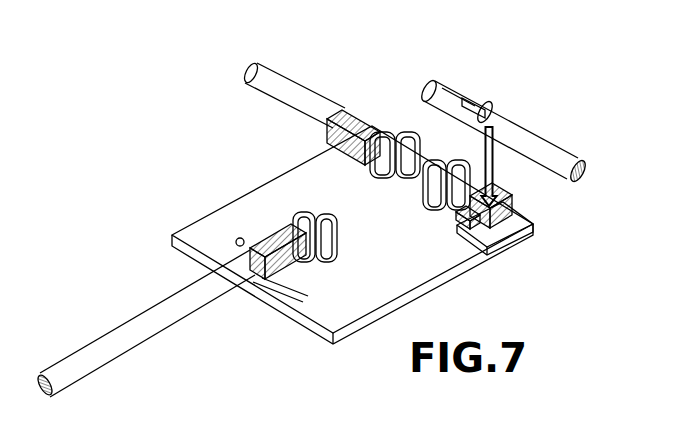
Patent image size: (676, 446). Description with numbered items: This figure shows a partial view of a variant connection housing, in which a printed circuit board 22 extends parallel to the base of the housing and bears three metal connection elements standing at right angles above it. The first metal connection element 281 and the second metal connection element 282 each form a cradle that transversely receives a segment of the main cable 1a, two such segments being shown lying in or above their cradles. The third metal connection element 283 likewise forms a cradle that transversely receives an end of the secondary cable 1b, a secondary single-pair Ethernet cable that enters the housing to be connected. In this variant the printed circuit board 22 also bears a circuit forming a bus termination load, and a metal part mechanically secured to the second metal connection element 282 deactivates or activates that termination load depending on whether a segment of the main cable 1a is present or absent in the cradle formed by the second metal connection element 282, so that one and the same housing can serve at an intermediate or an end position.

The main cable 1a is at (255, 73).
The secondary cable 1b is at (94, 329).
The printed circuit board 22 is at (437, 253).
The first metal connection element 281 is at (356, 113).
The second metal connection element 282 is at (508, 199).
The third metal connection element 283 is at (267, 238).